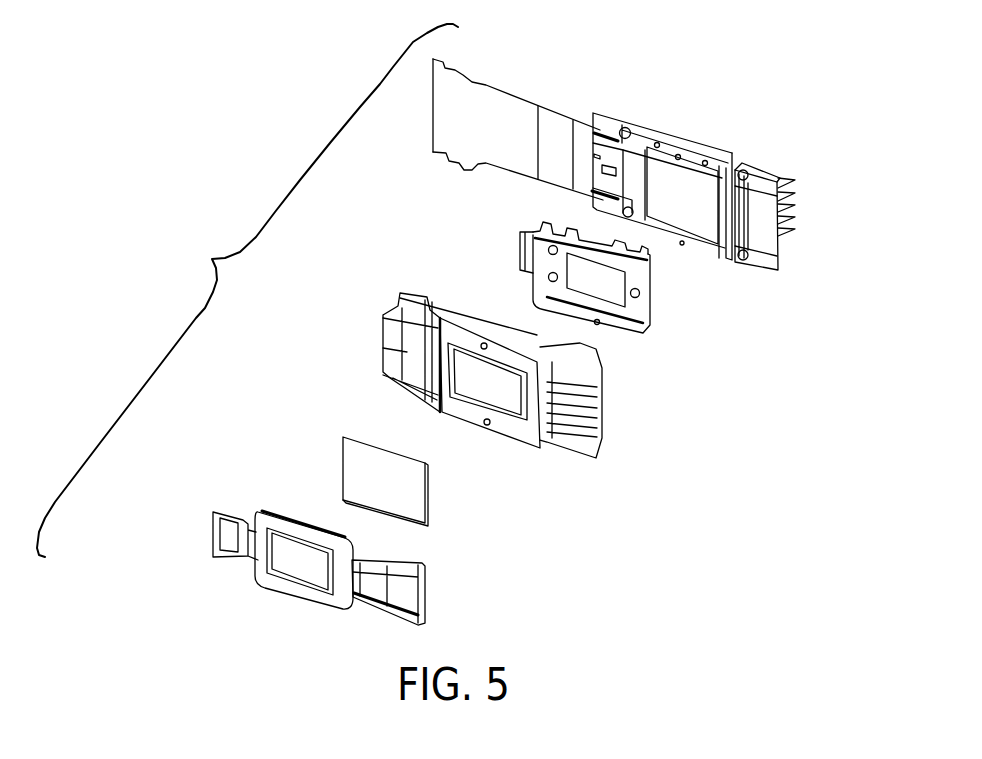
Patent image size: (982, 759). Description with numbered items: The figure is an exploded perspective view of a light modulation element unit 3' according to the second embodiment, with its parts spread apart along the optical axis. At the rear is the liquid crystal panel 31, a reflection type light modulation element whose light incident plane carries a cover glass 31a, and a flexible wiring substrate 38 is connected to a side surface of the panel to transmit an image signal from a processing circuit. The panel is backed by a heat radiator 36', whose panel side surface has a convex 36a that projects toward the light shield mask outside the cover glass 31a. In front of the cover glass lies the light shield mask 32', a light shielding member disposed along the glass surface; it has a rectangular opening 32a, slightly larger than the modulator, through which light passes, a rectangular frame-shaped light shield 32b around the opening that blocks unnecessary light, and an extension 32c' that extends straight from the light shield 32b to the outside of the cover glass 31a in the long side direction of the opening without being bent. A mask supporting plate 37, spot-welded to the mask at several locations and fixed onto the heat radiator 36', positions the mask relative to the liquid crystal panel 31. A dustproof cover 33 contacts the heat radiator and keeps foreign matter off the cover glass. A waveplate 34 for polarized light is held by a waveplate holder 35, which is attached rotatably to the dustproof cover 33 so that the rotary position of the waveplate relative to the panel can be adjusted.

The light modulation element unit 3' is at (247, 290).
The flexible wiring substrate 38 is at (505, 112).
The liquid crystal panel 31 is at (668, 175).
The cover glass 31a is at (668, 175).
The heat radiator 36' is at (746, 177).
The convex 36a is at (736, 221).
The mask supporting plate 37 is at (548, 230).
The light shield mask 32' is at (599, 317).
The opening 32a is at (553, 272).
The light shield 32b is at (635, 273).
The extension 32c' is at (685, 305).
The dustproof cover 33 is at (602, 440).
The waveplate 34 is at (420, 498).
The waveplate holder 35 is at (420, 600).